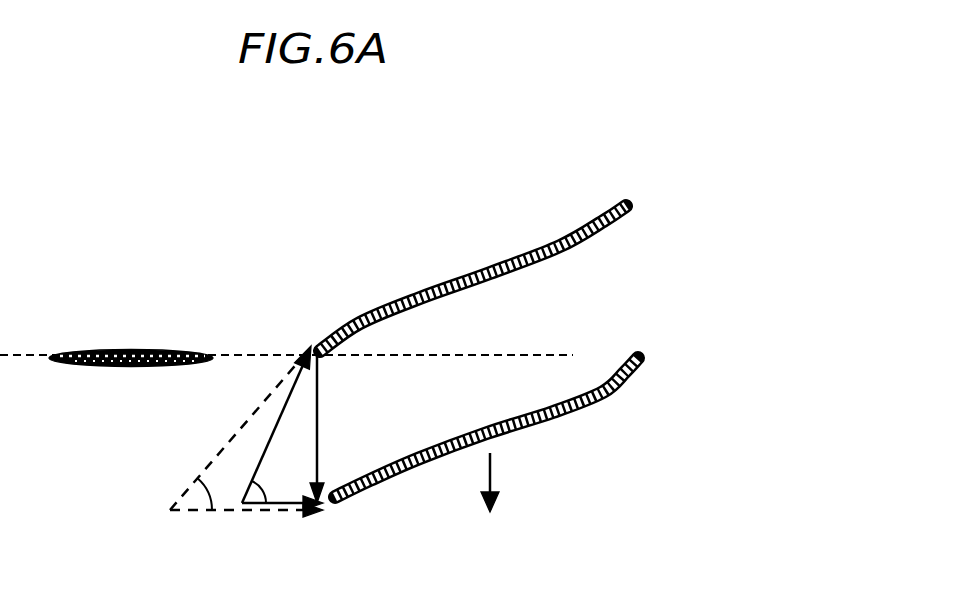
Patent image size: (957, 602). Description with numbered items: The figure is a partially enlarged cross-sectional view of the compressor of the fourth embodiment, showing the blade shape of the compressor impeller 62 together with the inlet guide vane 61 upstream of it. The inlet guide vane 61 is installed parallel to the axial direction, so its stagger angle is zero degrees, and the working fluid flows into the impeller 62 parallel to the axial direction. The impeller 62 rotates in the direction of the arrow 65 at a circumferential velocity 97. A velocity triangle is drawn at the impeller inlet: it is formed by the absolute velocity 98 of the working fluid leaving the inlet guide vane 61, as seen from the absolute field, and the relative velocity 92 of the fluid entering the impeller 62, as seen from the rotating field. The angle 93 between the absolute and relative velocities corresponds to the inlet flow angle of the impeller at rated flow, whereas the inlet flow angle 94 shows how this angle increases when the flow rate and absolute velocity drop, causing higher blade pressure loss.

The inlet guide vane 61 is at (75, 367).
The compressor impeller 62 is at (389, 293).
The rotation direction arrow 65 is at (491, 500).
The relative velocity 92 is at (235, 440).
The inlet flow angle 93 is at (193, 498).
The inlet flow angle 94 is at (247, 497).
The circumferential velocity 97 is at (318, 430).
The absolute velocity 98 is at (246, 522).